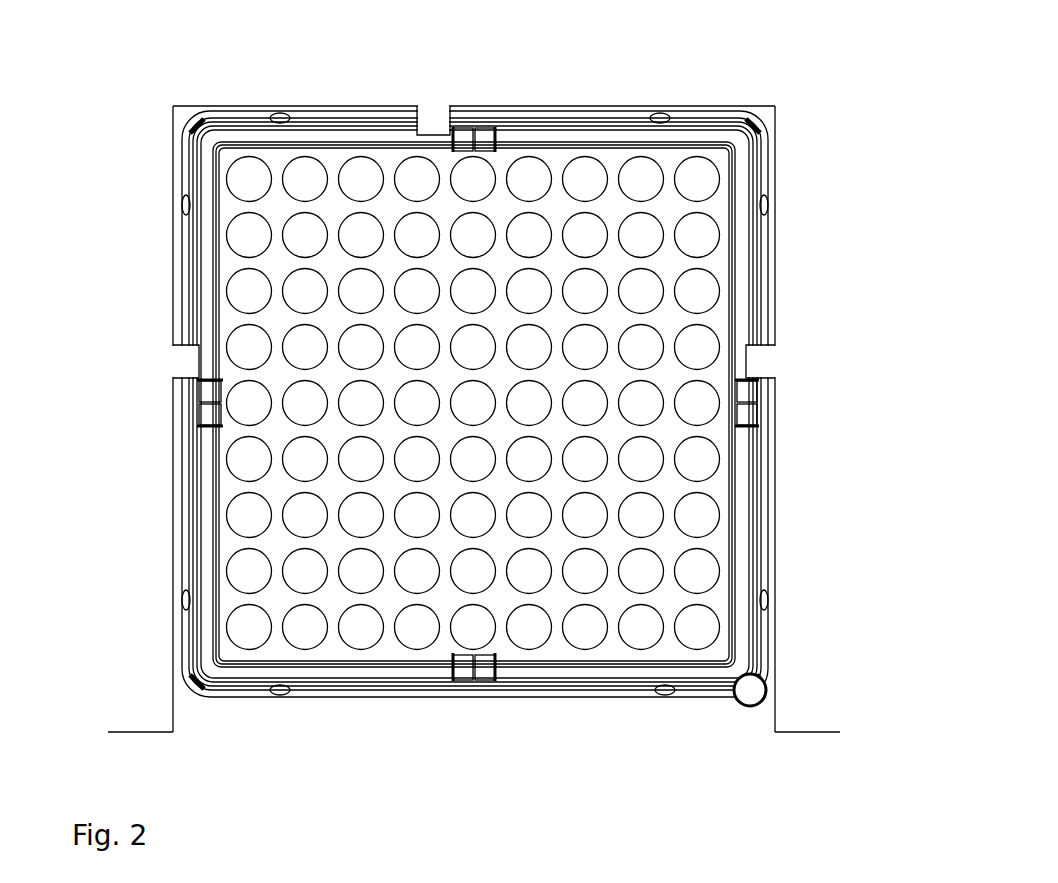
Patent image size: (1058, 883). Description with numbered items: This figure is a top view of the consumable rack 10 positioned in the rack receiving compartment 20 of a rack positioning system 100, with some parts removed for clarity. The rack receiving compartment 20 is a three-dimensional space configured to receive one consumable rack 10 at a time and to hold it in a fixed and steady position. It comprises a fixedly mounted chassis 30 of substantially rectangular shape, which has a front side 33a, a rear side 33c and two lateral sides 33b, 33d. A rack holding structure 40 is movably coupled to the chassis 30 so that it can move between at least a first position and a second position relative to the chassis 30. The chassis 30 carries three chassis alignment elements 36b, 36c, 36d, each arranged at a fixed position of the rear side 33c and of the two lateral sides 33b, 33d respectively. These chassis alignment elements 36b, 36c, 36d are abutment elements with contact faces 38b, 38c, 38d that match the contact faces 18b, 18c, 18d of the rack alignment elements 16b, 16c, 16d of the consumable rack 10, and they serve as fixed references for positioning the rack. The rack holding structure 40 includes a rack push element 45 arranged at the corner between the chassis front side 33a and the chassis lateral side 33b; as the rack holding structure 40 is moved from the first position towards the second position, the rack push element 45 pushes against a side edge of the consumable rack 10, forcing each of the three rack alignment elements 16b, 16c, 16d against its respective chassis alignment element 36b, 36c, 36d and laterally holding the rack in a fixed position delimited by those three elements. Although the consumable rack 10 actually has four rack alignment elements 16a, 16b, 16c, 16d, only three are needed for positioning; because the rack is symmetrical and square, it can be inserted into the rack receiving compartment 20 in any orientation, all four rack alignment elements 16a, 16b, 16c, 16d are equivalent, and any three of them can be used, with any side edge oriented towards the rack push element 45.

The consumable rack 10 is at (320, 690).
The rack receiving compartment 20 is at (410, 730).
The chassis 30 is at (172, 214).
The rack positioning system 100 is at (822, 182).
The rack alignment element 16a is at (475, 680).
The rack alignment element 16b is at (745, 404).
The rack alignment element 16c is at (484, 133).
The rack alignment element 16d is at (203, 406).
The contact face 18b is at (750, 388).
The contact face 18c is at (458, 134).
The contact face 18d is at (199, 384).
The front side 33a is at (597, 730).
The lateral side 33b is at (778, 602).
The rear side 33c is at (633, 106).
The lateral side 33d is at (172, 548).
The chassis alignment element 36b is at (757, 355).
The chassis alignment element 36c is at (445, 131).
The chassis alignment element 36d is at (196, 352).
The contact face 38b is at (750, 378).
The contact face 38c is at (450, 134).
The contact face 38d is at (203, 374).
The rack holding structure 40 is at (734, 748).
The rack push element 45 is at (740, 707).